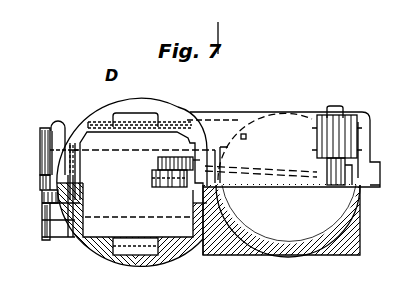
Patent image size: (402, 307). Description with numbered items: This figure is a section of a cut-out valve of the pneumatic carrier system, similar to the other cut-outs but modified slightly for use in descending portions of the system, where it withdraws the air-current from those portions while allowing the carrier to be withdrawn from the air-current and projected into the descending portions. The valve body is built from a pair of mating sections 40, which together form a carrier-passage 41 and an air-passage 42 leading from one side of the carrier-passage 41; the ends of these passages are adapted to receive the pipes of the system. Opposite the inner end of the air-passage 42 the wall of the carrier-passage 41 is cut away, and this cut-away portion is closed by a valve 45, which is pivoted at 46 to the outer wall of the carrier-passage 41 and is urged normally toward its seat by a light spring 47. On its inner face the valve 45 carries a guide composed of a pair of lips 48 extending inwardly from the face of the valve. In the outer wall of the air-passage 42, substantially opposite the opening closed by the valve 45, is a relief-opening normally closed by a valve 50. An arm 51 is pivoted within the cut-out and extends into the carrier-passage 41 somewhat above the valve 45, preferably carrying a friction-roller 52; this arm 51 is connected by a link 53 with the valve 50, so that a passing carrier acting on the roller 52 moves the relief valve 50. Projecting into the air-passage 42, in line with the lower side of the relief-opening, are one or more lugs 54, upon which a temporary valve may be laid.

The mating sections 40 is at (80, 128).
The carrier-passage 41 is at (171, 262).
The air-passage 42 is at (265, 220).
The valve 45 is at (108, 221).
The pivot 46 is at (50, 142).
The light spring 47 is at (44, 178).
The lips 48 is at (138, 122).
The valve 50 is at (357, 116).
The arm 51 is at (190, 160).
The friction-roller 52 is at (173, 187).
The link 53 is at (244, 172).
The lugs 54 is at (246, 134).